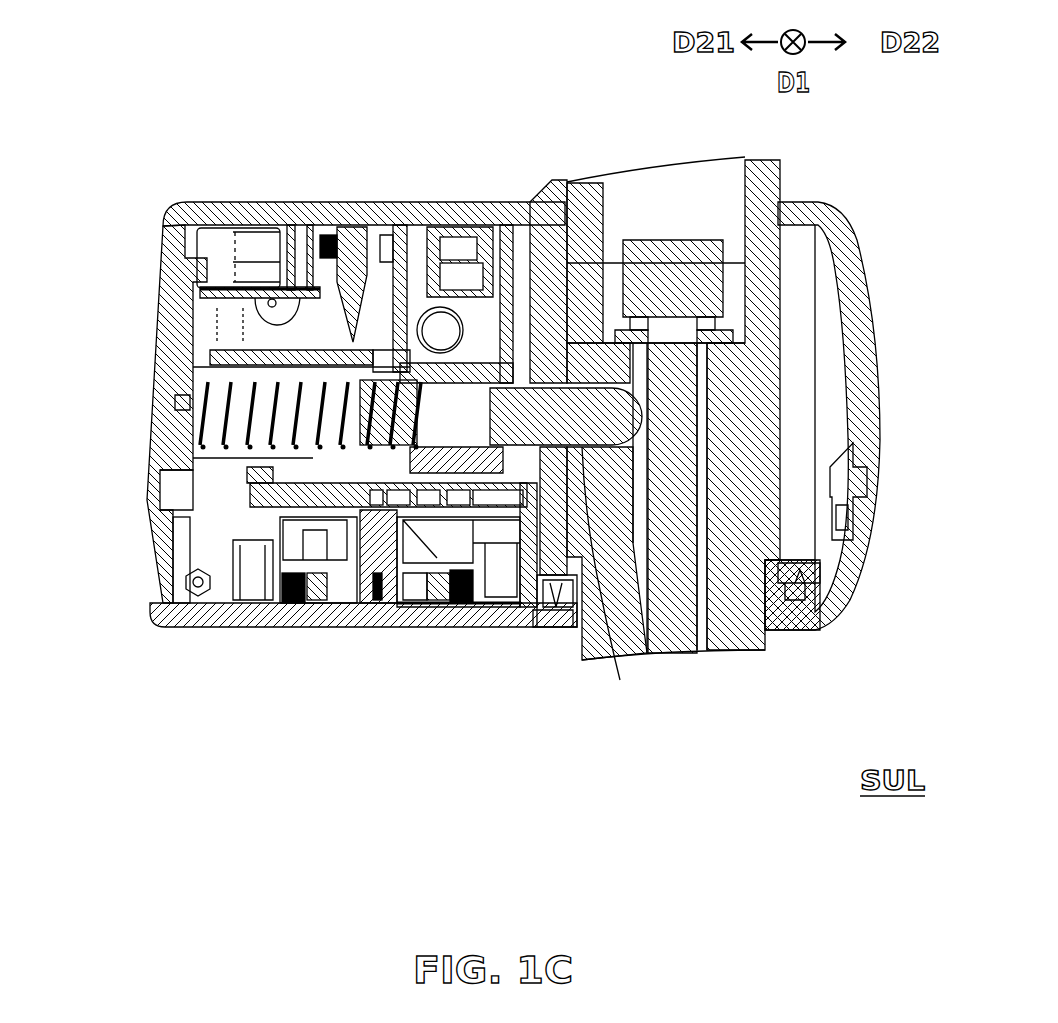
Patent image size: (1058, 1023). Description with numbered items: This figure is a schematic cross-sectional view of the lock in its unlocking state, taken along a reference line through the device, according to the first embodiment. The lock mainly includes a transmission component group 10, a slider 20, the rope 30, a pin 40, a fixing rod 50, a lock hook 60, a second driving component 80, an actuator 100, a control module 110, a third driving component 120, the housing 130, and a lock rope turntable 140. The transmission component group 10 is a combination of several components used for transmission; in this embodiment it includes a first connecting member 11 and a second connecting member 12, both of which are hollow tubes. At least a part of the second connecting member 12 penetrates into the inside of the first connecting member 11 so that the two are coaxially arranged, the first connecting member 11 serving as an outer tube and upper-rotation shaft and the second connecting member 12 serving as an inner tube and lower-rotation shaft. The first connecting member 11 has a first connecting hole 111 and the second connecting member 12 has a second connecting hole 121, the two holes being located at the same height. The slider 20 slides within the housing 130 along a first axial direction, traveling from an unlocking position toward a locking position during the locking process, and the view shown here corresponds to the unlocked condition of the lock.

The transmission component group 10 is at (645, 68).
The first connecting member 11 is at (547, 260).
The second connecting member 12 is at (577, 278).
The slider 20 is at (463, 307).
The rope 30 is at (150, 610).
The pin 40 is at (660, 615).
The fixing rod 50 is at (373, 237).
The lock hook 60 is at (430, 263).
The second driving component 80 is at (158, 425).
The actuator 100 is at (212, 245).
The control module 110 is at (262, 290).
The first connecting hole 111 is at (560, 630).
The third driving component 120 is at (322, 240).
The second connecting hole 121 is at (618, 680).
The housing 130 is at (830, 627).
The lock rope turntable 140 is at (347, 557).